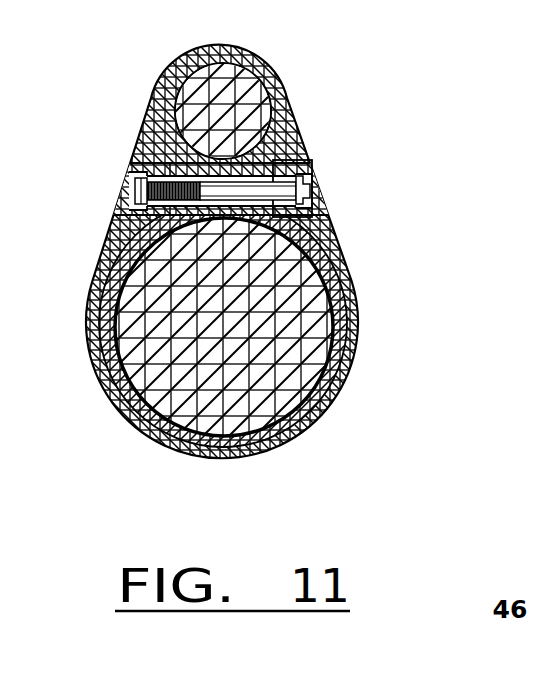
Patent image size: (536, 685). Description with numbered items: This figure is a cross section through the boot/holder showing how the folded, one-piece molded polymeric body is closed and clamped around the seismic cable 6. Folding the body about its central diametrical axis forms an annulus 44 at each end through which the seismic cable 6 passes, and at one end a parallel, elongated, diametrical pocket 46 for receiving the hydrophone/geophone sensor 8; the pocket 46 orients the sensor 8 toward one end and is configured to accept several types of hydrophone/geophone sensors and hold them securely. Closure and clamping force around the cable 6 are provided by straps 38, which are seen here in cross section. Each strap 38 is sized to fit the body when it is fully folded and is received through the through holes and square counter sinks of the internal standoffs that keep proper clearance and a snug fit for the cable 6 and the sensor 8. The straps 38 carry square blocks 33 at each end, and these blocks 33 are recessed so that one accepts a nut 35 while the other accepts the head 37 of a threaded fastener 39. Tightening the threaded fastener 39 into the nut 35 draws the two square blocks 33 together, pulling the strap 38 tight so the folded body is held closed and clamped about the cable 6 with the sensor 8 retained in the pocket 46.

The seismic cable 6 is at (230, 95).
The annulus 44 is at (262, 78).
The threaded fastener 39 is at (282, 138).
The square blocks 33 is at (138, 168).
The nut 35 is at (134, 200).
The head 37 is at (312, 192).
The elongated pocket 46 is at (356, 328).
The straps 38 is at (347, 380).
The sensor 8 is at (195, 376).